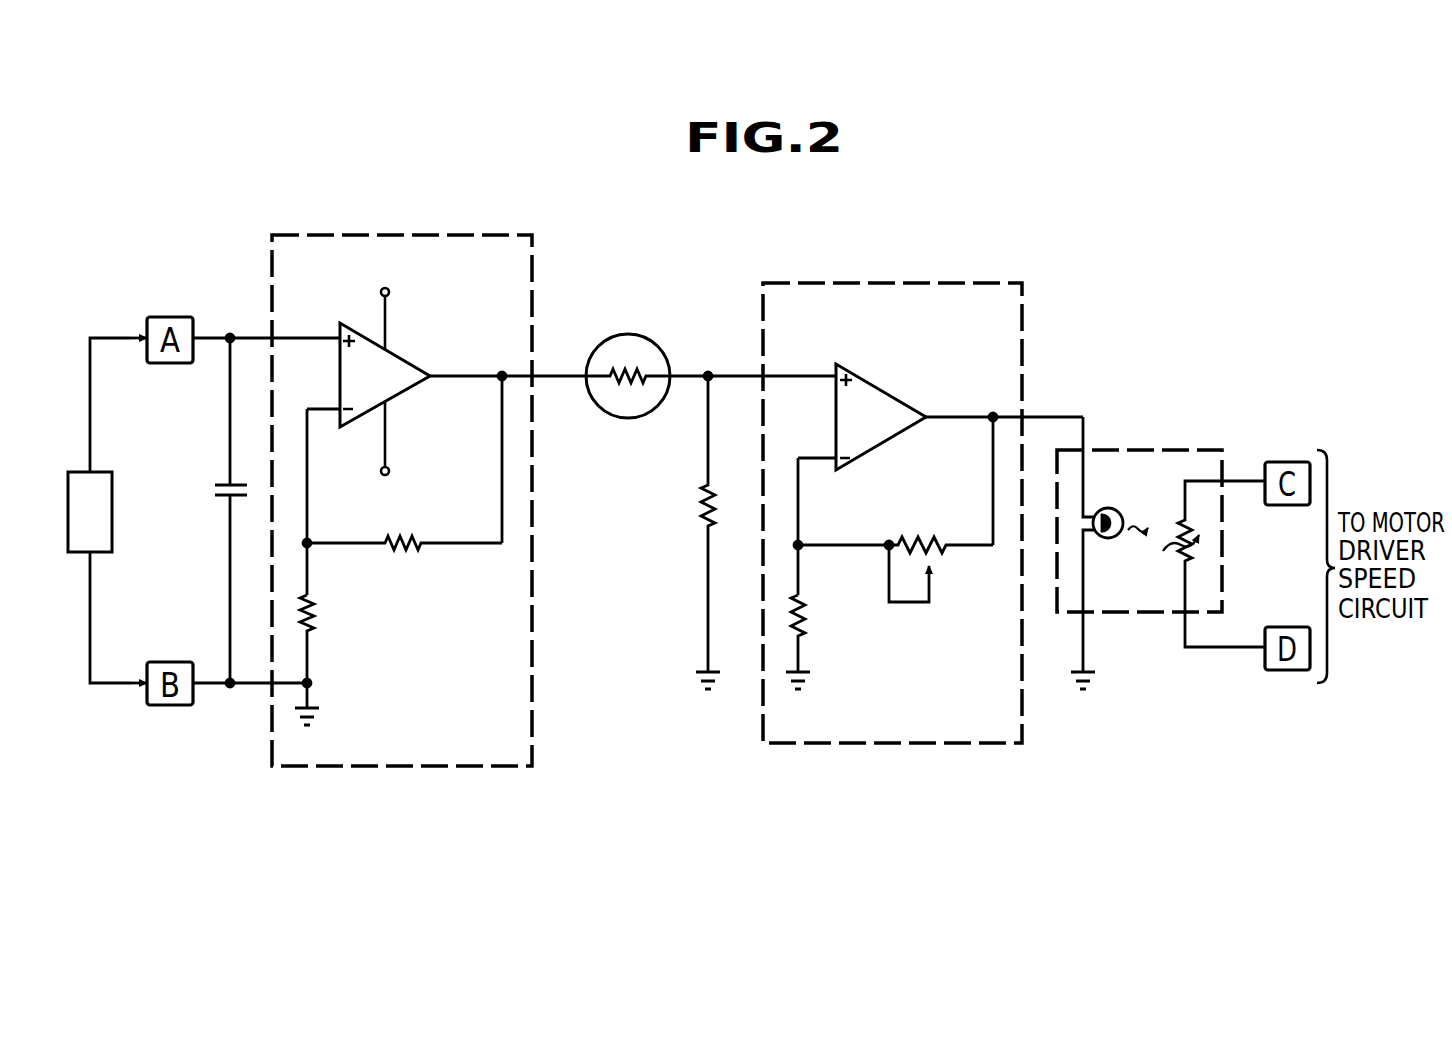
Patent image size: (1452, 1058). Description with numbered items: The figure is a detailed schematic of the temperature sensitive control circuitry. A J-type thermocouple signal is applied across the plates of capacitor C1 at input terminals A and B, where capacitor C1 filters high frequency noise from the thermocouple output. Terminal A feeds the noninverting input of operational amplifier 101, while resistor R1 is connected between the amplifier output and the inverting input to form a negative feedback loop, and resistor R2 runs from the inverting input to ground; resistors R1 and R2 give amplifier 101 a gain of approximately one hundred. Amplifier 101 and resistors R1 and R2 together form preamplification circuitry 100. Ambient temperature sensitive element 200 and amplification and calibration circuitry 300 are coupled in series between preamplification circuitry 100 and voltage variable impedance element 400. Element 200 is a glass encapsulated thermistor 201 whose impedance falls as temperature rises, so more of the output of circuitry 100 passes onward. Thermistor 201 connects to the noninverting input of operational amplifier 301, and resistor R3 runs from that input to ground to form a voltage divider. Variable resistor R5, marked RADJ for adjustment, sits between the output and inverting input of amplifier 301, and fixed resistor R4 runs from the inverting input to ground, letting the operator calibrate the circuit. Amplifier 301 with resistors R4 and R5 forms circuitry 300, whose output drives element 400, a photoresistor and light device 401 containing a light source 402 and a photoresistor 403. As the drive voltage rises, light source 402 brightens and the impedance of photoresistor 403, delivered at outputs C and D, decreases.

The preamplification circuitry 100 is at (455, 767).
The operational amplifier 101 is at (418, 388).
The ambient temperature sensitive element 200 is at (623, 430).
The thermistor 201 is at (651, 337).
The amplification and calibration circuitry 300 is at (900, 745).
The operational amplifier 301 is at (890, 392).
The voltage variable impedance element 400 is at (1126, 648).
The photoresistor and light device 401 is at (1172, 448).
The light source 402 is at (1113, 541).
The photoresistor 403 is at (1202, 548).
The resistor R1 is at (404, 565).
The resistor R2 is at (316, 614).
The resistor R3 is at (702, 509).
The fixed value resistor R4 is at (818, 626).
The variable resistor R5 is at (895, 527).
The adjustable resistor RADJ is at (914, 593).
The capacitor C1 is at (218, 486).